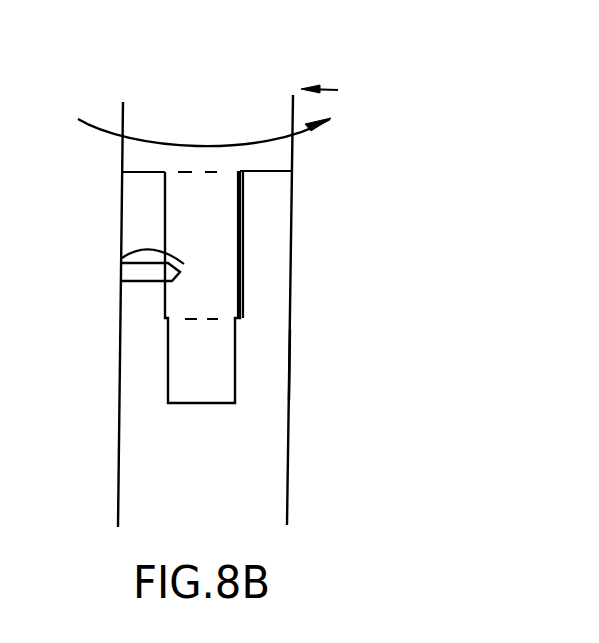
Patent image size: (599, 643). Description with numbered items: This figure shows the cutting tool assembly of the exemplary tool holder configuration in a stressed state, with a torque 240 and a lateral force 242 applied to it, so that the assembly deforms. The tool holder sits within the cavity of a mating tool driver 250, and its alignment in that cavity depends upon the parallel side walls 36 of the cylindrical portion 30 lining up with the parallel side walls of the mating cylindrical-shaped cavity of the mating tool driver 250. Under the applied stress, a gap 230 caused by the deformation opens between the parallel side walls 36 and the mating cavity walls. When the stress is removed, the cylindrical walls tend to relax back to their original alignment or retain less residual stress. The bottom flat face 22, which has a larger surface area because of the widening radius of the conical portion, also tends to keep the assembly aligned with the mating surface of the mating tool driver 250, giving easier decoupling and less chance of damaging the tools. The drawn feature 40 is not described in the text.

The bottom flat face 22 is at (142, 175).
The cylindrical portion 30 is at (125, 257).
The parallel side walls 36 is at (157, 229).
The slot 40 is at (177, 355).
The gap 230 is at (243, 239).
The torque 240 is at (225, 138).
The lateral force 242 is at (347, 99).
The mating tool driver 250 is at (279, 363).